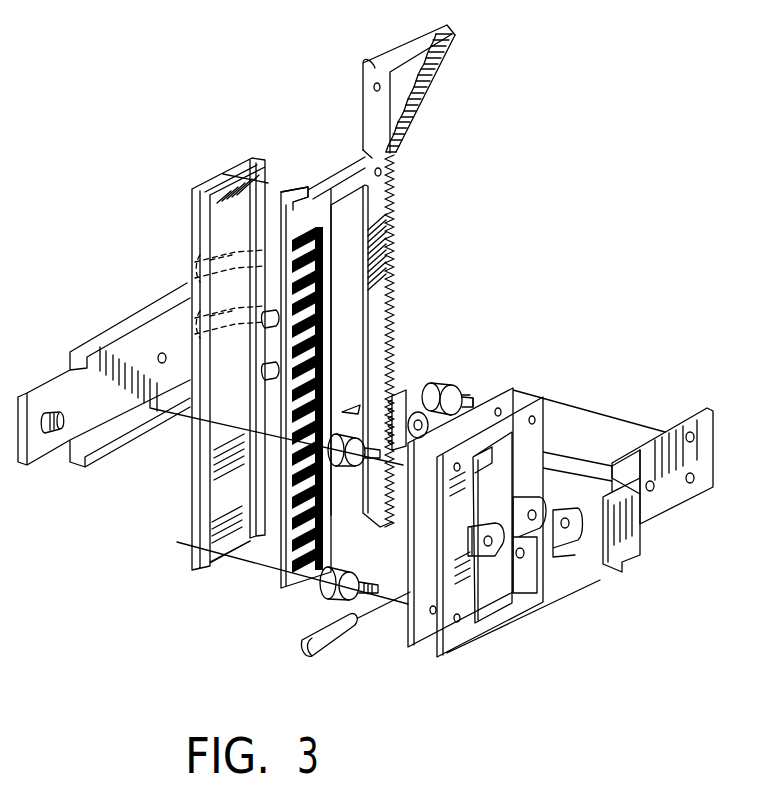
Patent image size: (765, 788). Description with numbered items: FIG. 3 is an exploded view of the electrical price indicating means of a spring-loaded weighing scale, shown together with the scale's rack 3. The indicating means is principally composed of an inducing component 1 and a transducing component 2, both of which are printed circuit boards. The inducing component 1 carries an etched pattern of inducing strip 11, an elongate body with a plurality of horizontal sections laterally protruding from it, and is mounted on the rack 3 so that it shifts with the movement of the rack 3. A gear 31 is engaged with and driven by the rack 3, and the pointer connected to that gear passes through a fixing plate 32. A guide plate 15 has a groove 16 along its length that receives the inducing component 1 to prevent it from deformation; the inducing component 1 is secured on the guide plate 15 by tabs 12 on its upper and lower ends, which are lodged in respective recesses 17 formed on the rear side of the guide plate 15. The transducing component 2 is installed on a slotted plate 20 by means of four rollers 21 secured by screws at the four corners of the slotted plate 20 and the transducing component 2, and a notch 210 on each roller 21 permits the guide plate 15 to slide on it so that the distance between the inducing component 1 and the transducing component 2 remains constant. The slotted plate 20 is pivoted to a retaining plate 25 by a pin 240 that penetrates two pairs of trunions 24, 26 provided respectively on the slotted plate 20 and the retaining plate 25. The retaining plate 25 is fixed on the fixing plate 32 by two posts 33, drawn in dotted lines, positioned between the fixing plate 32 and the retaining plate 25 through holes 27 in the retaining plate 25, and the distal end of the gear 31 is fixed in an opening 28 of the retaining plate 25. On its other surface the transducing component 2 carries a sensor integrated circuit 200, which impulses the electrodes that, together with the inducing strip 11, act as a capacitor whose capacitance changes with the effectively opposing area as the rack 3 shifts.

The inducing component 1 is at (286, 588).
The transducing component 2 is at (410, 650).
The rack 3 is at (378, 200).
The inducing strip 11 is at (328, 533).
The tabs 12 is at (294, 188).
The guide plate 15 is at (178, 491).
The groove 16 is at (232, 563).
The recesses 17 is at (225, 175).
The slotted plate 20 is at (442, 657).
The rollers 21 is at (456, 386).
The trunions 24 is at (492, 560).
The retaining plate 25 is at (628, 548).
The trunions 26 is at (565, 562).
The holes 27 is at (688, 434).
The opening 28 is at (652, 492).
The gear 31 is at (402, 400).
The fixing plate 32 is at (58, 392).
The posts 33 is at (195, 262).
The sensor integrated circuit 200 is at (547, 441).
The notch 210 is at (434, 385).
The pin 240 is at (332, 650).